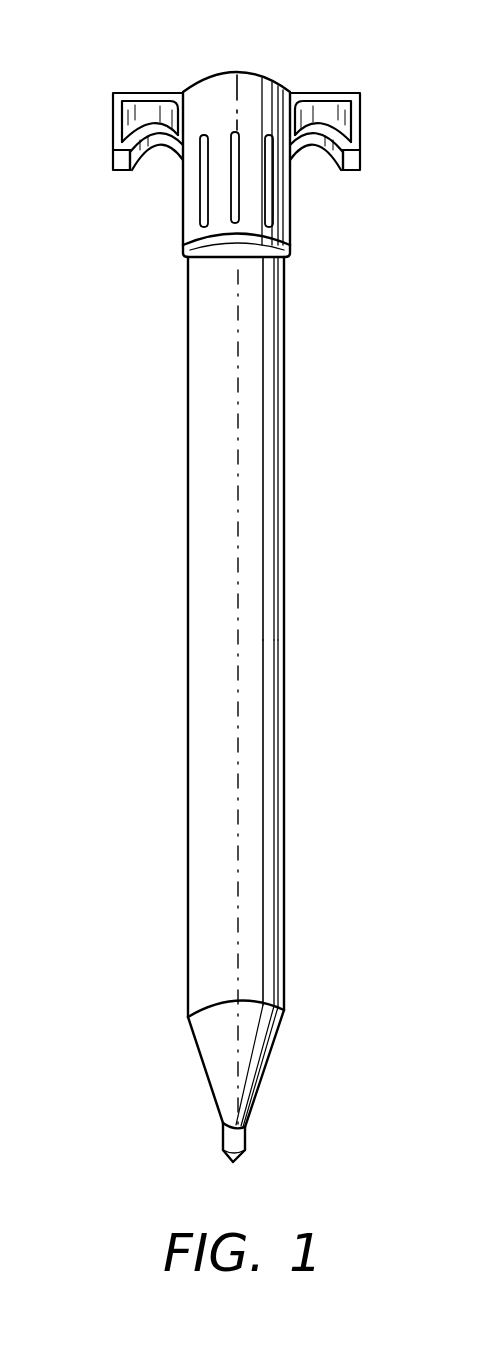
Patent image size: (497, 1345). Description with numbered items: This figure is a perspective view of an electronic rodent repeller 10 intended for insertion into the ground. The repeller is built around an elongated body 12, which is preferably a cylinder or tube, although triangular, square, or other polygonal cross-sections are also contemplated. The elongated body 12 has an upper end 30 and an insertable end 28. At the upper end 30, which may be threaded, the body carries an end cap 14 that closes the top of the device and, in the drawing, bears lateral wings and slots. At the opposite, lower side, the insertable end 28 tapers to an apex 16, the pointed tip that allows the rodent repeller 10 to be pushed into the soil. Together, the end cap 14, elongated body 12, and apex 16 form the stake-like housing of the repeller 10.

The electronic rodent repeller 10 is at (88, 423).
The end cap 14 is at (248, 86).
The elongated body 12 is at (262, 677).
The upper end 30 is at (272, 288).
The insertable end 28 is at (268, 973).
The apex 16 is at (210, 1060).